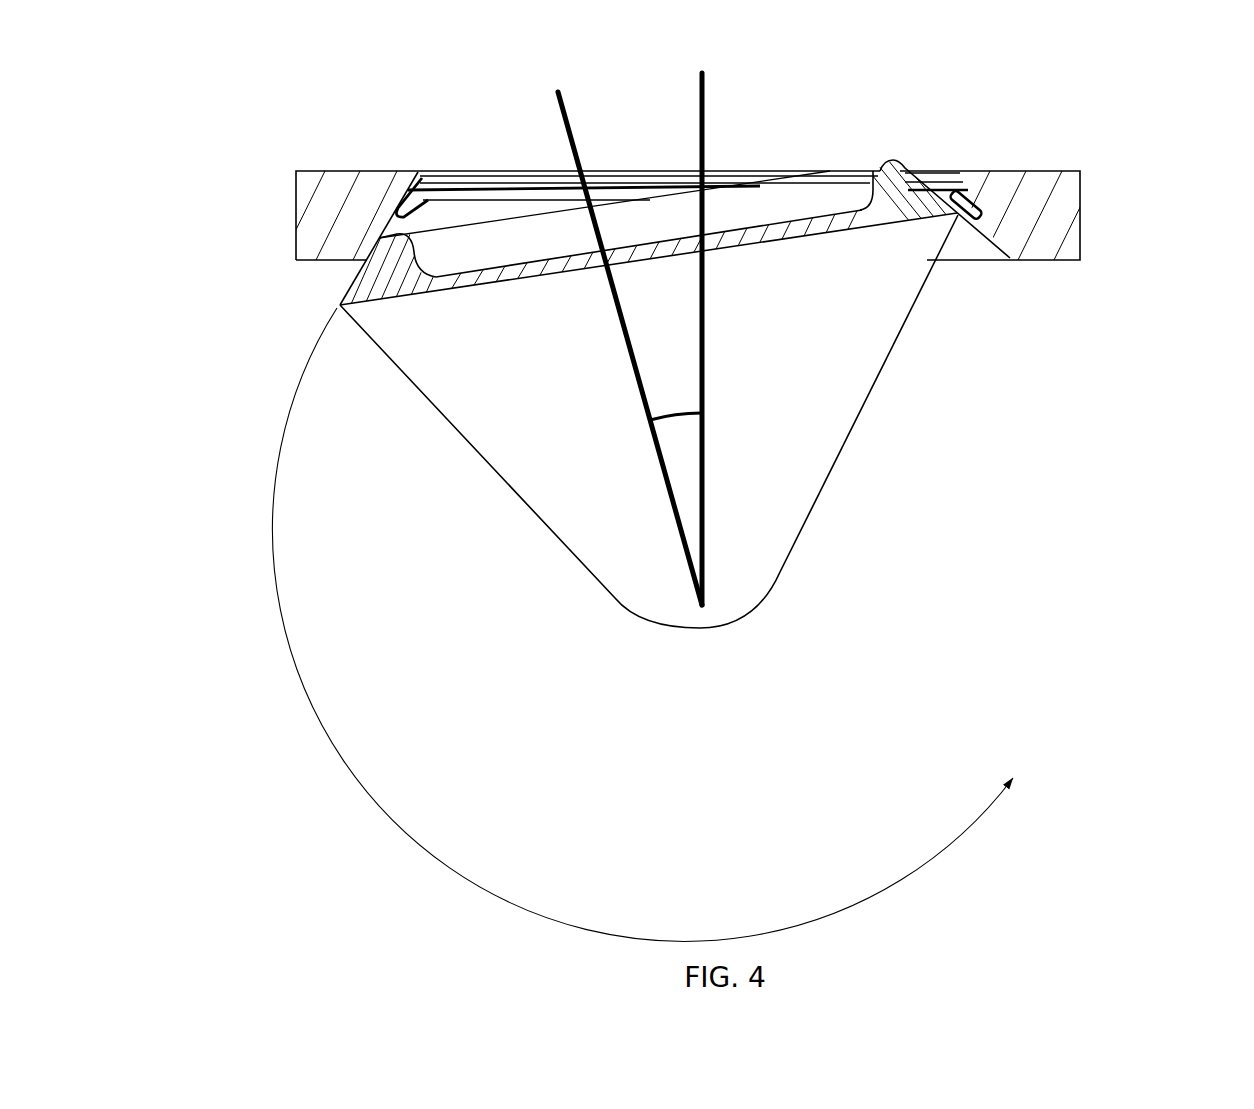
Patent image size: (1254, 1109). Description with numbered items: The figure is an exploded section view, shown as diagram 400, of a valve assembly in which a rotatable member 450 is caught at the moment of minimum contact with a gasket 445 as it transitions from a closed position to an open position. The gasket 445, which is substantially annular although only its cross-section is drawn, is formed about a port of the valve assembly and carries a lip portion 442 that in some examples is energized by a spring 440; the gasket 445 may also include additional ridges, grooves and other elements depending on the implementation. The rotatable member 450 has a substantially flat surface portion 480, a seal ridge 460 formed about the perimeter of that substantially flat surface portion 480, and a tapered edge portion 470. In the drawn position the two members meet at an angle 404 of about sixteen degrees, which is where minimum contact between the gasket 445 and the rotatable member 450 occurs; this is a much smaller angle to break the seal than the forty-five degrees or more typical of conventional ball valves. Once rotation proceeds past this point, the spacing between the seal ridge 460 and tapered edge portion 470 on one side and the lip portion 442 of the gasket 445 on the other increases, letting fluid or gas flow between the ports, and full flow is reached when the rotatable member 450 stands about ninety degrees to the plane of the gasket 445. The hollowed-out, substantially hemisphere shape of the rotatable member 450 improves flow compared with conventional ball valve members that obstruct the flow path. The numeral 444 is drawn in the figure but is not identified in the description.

The diagram 400 is at (1153, 117).
The angle 404 is at (668, 398).
The spring 440 is at (494, 207).
The lip portion 442 is at (962, 216).
The retaining clip 444 is at (988, 207).
The gasket 445 is at (291, 238).
The rotatable member 450 is at (995, 482).
The seal ridge 460 is at (914, 158).
The tapered edge portion 470 is at (347, 277).
The substantially flat surface portion 480 is at (808, 212).